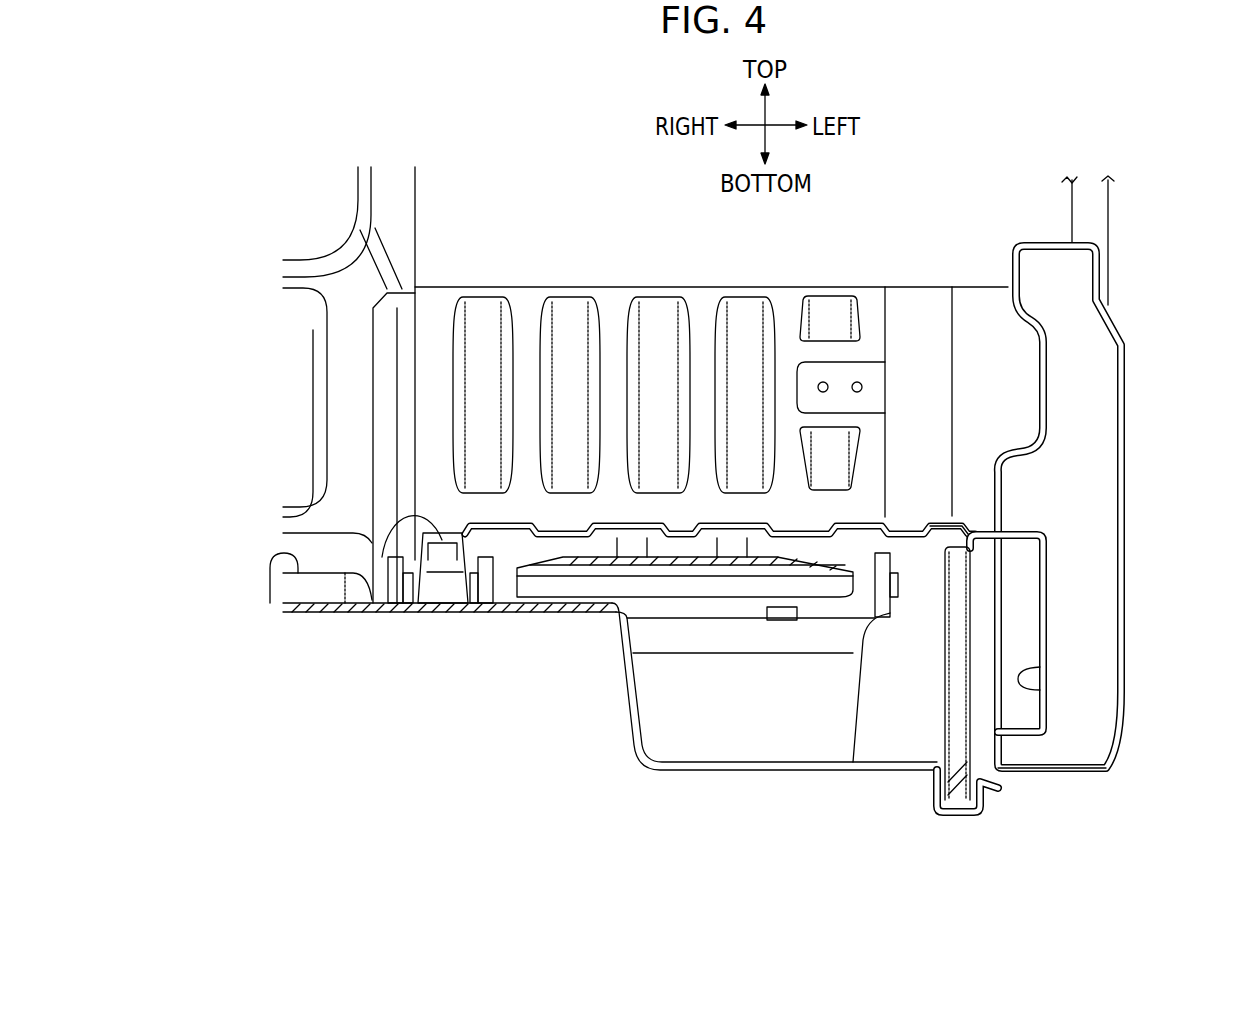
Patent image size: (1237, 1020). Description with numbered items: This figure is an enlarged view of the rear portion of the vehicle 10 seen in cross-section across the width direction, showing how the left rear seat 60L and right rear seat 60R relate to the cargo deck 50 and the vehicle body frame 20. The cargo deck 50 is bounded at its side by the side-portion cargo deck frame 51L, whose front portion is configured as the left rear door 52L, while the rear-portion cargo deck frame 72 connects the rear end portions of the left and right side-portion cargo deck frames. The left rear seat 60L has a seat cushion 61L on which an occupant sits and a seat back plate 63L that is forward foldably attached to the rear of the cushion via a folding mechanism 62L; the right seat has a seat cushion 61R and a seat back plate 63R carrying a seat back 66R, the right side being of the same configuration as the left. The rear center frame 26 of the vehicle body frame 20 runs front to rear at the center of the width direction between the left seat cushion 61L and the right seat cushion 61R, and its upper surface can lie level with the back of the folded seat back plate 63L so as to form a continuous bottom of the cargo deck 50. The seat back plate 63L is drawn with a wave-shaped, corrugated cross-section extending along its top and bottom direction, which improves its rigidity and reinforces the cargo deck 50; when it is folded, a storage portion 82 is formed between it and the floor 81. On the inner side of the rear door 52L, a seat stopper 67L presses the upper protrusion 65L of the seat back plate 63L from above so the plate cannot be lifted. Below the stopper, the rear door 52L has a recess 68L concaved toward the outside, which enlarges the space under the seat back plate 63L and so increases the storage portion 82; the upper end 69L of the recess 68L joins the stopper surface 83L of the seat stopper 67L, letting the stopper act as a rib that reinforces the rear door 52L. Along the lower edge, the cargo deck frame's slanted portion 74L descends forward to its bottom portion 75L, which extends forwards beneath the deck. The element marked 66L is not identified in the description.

The vehicle 10 is at (308, 128).
The vehicle body frame 20 is at (1114, 210).
The rear center frame 26 is at (385, 605).
The cargo deck 50 is at (559, 202).
The side-portion cargo deck frame 51L is at (980, 275).
The rear door 52L is at (1128, 372).
The right rear seat 60R is at (276, 200).
The left rear seat 60L is at (674, 632).
The seat cushion 61R is at (270, 603).
The seat cushion 61L is at (494, 605).
The folding mechanism 62L is at (890, 613).
The seat back plate 63R is at (420, 206).
The seat back plate 63L is at (628, 528).
The upper protrusion 65L is at (950, 522).
The seat back 66R is at (303, 236).
The left plate 66L is at (553, 605).
The seat stopper 67L is at (968, 490).
The recess 68L is at (1025, 672).
The upper end 69L is at (1020, 550).
The rear-portion cargo deck frame 72 is at (720, 292).
The slanted portion 74L is at (973, 740).
The bottom portion 75L is at (975, 762).
The floor 81 is at (778, 752).
The storage portion 82 is at (756, 727).
The stopper surface 83L is at (900, 586).